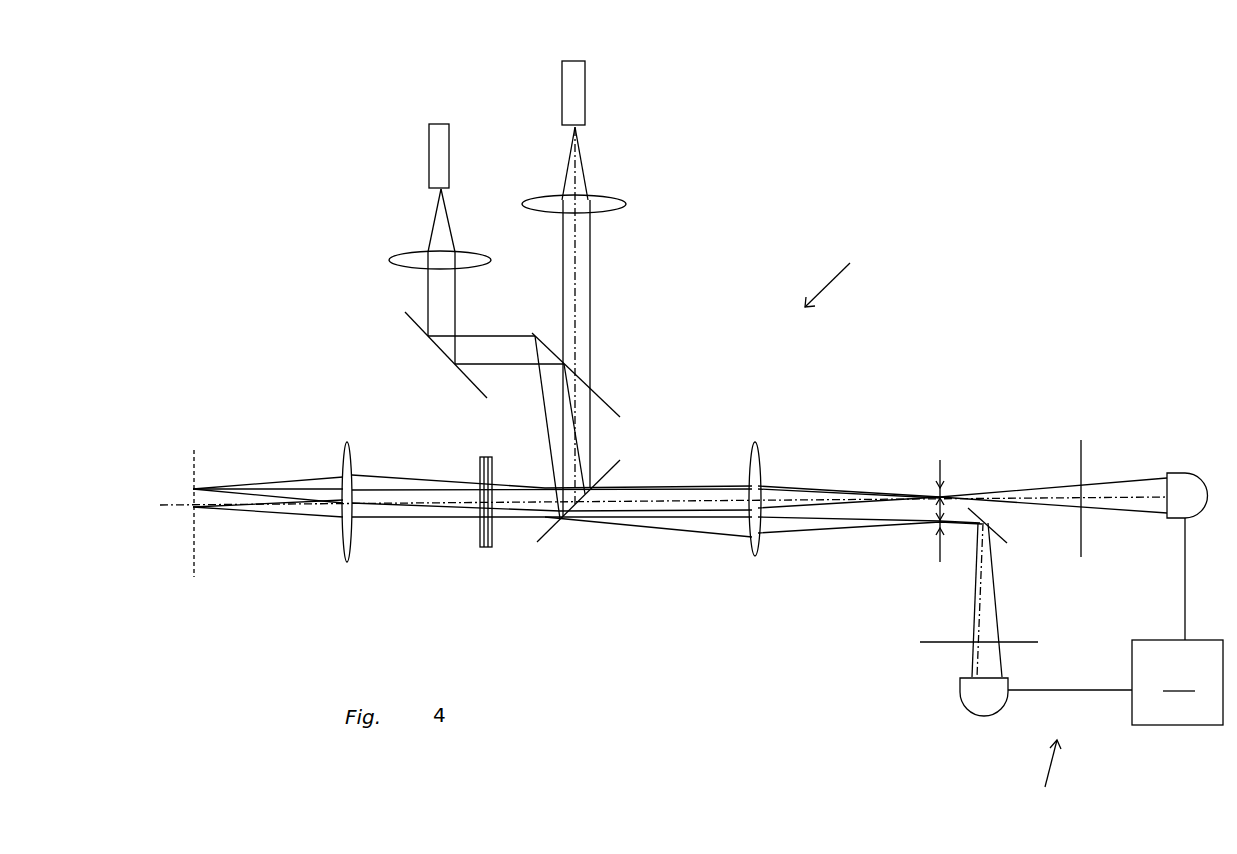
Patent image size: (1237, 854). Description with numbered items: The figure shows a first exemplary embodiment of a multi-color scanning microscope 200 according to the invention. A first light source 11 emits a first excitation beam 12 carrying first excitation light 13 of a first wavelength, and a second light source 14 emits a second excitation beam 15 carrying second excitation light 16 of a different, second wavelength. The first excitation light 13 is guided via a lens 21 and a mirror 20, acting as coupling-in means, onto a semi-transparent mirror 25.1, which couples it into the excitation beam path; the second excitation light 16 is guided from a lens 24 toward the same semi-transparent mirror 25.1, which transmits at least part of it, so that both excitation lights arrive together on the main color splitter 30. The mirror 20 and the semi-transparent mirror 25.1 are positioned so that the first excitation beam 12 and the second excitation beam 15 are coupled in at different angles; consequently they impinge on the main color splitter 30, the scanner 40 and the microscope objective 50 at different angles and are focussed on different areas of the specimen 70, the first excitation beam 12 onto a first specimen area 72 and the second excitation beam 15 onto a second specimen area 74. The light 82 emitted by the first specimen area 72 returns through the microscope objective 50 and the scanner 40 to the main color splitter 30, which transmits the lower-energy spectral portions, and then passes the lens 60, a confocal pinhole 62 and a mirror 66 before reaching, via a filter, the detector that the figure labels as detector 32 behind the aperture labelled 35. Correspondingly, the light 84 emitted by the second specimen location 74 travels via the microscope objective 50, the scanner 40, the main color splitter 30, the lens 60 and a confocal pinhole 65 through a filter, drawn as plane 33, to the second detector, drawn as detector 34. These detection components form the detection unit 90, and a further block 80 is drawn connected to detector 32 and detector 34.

The first light source 11 is at (438, 153).
The first excitation beam 12 is at (445, 283).
The first excitation light 13 is at (440, 232).
The second light source 14 is at (577, 93).
The second excitation beam 15 is at (581, 317).
The second excitation light 16 is at (580, 184).
The mirror 20 is at (417, 327).
The lens 21 is at (398, 258).
The lens 24 is at (612, 205).
The semi-transparent mirror 25.1 is at (612, 406).
The main color splitter 30 is at (550, 534).
The second detector 32 is at (980, 699).
The detection plane 33 is at (1078, 451).
The first detector 34 is at (1185, 483).
The pinhole aperture 35 is at (930, 643).
The scanner 40 is at (490, 546).
The microscope objective 50 is at (350, 538).
The lens 60 is at (758, 551).
The confocal pinhole 62 is at (938, 548).
The confocal pinhole 65 is at (938, 483).
The mirror 66 is at (1000, 534).
The specimen 70 is at (195, 544).
The first specimen area 72 is at (193, 489).
The second specimen area 74 is at (193, 507).
The control unit 80 is at (1115, 621).
The light emitted by the first specimen area 82 is at (335, 485).
The light emitted by the second specimen location 84 is at (337, 511).
The detection unit 90 is at (1044, 780).
The multi-color scanning microscope 200 is at (850, 278).